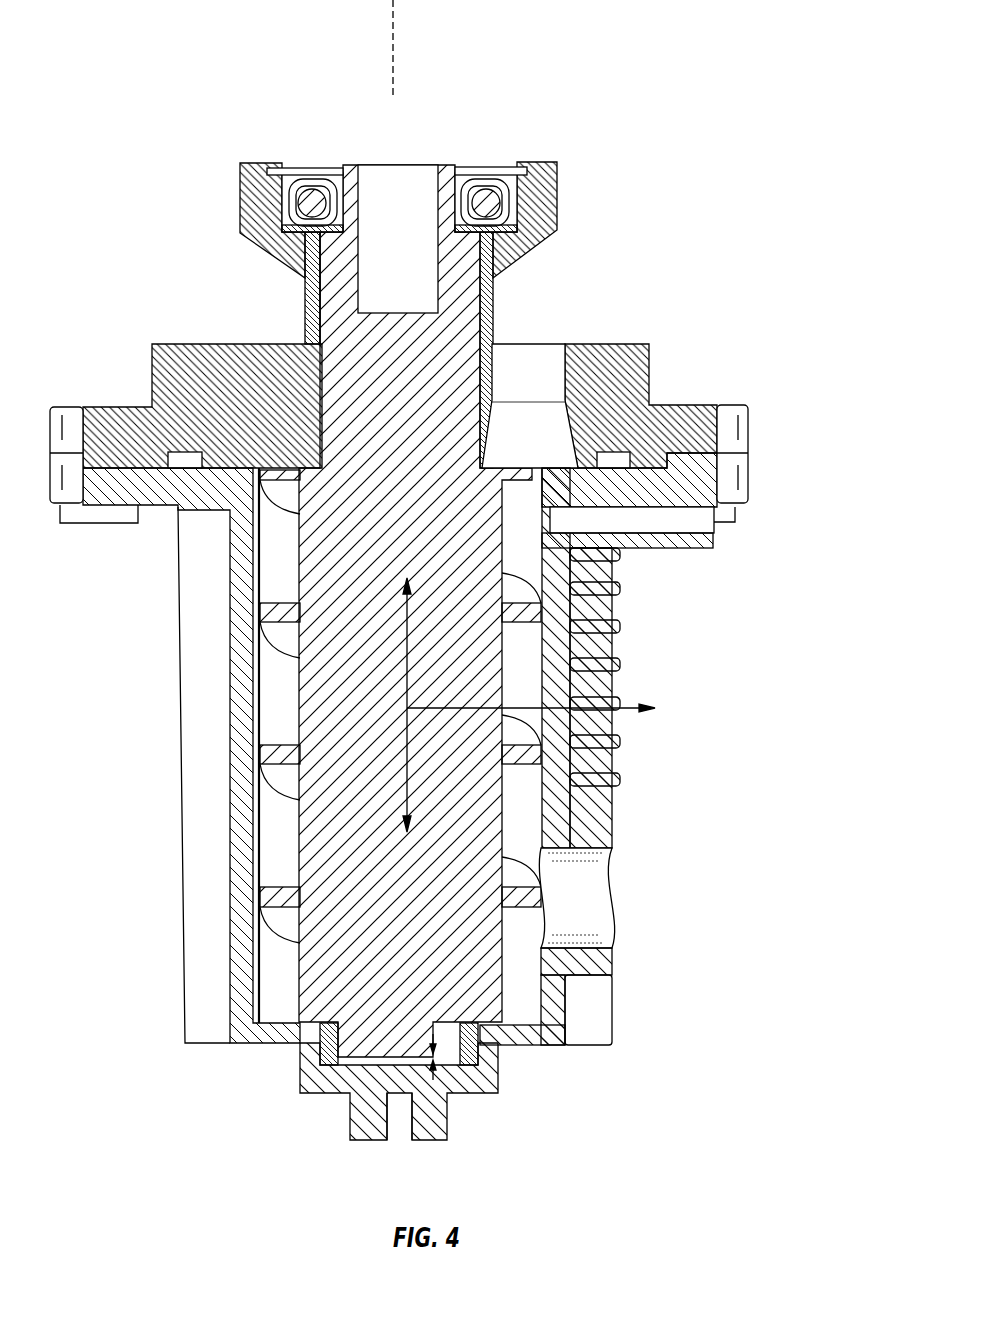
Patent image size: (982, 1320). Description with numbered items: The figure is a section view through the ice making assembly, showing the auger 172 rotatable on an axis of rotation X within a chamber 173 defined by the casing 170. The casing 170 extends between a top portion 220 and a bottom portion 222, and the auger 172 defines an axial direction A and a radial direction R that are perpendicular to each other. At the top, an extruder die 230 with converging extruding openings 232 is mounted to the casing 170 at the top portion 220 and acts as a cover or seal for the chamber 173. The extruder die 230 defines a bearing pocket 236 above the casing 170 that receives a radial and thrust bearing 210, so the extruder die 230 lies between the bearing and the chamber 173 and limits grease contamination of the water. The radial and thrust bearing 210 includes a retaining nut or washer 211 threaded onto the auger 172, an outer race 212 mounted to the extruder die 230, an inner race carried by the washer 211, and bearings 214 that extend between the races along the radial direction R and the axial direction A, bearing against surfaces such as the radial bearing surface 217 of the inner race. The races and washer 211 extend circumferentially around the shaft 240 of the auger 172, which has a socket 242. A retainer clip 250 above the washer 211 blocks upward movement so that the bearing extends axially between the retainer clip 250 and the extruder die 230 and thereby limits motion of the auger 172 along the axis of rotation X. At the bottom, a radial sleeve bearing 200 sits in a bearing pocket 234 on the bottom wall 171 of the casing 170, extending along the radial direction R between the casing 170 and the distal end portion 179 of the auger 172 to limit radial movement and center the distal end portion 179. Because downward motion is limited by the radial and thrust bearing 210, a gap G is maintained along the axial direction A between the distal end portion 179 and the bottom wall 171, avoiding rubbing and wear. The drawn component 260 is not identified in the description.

The axis of rotation X is at (397, 48).
The radial and thrust bearing 210 is at (290, 162).
The retaining nut or washer 211 is at (325, 168).
The socket 242 is at (401, 208).
The retainer clip 250 is at (506, 172).
The radial bearing surface of inner race 217 is at (300, 196).
The bearings 214 is at (548, 232).
The outer race 212 is at (298, 237).
The shaft 240 is at (335, 278).
The converging extruding openings 232 is at (526, 438).
The bearing pocket 236 is at (490, 240).
The extruder die 230 is at (676, 418).
The top portion 220 is at (760, 448).
The axial direction A is at (413, 636).
The radial direction R is at (643, 713).
The casing 170 is at (228, 758).
The chamber 173 is at (522, 802).
The ribbed outlet tube 260 is at (585, 896).
The auger 172 is at (372, 862).
The bottom portion 222 is at (642, 1037).
The distal end portion 179 is at (392, 1026).
The radial sleeve bearing 200 is at (328, 1052).
The gap G is at (490, 1048).
The bottom wall 171 is at (463, 1094).
The bearing pocket 234 is at (405, 1082).